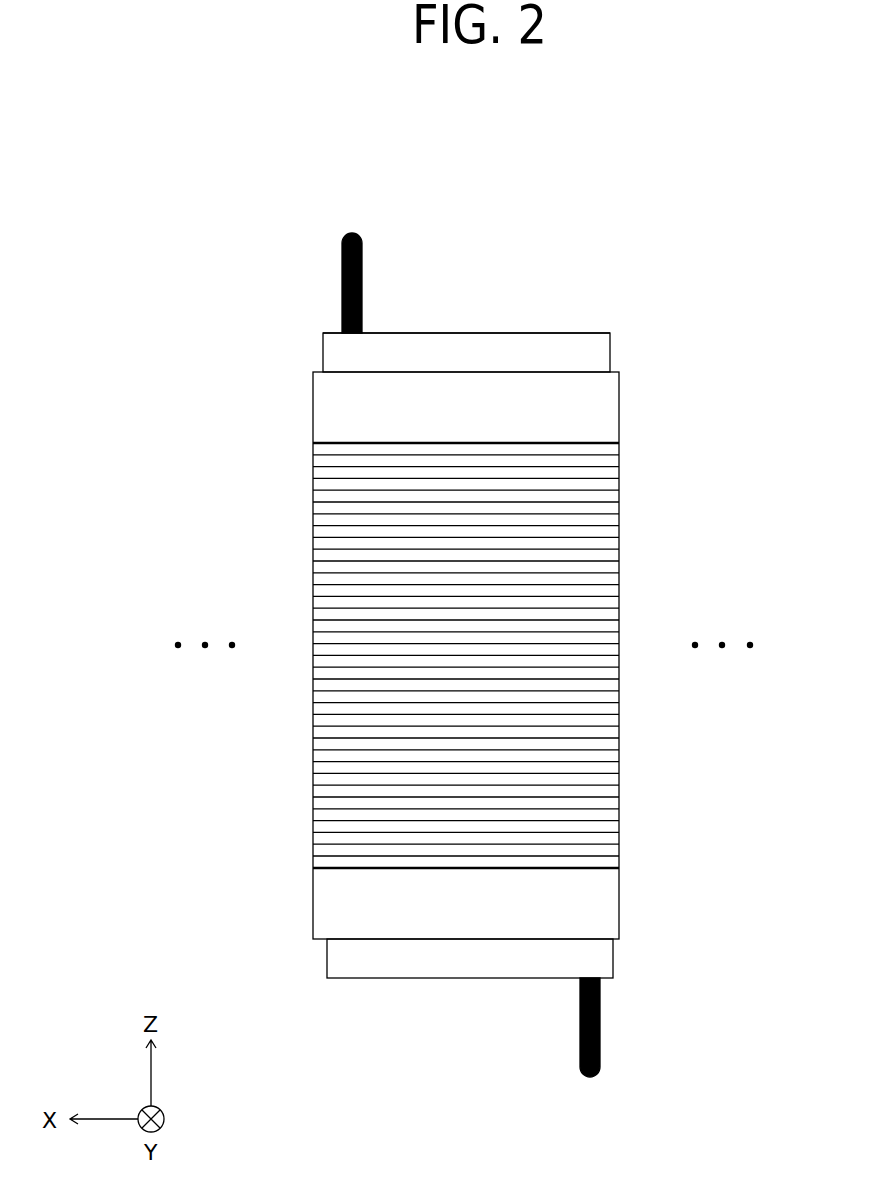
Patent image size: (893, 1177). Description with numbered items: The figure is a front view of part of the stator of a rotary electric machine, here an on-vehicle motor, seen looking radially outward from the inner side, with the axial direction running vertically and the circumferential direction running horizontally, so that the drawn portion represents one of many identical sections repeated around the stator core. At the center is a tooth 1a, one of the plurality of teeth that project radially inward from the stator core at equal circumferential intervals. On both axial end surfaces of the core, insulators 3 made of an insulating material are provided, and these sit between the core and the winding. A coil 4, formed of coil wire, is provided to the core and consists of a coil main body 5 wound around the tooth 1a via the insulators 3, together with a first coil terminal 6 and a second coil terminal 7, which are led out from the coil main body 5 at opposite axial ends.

The tooth 1a is at (620, 783).
The insulator 3 is at (619, 408).
The coil 4 is at (598, 333).
The coil main body 5 is at (323, 355).
The first coil terminal 6 is at (342, 284).
The second coil terminal 7 is at (600, 1038).